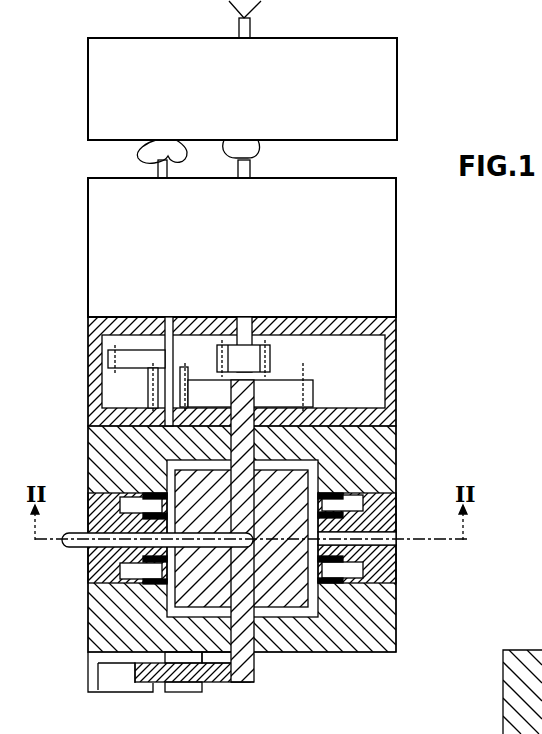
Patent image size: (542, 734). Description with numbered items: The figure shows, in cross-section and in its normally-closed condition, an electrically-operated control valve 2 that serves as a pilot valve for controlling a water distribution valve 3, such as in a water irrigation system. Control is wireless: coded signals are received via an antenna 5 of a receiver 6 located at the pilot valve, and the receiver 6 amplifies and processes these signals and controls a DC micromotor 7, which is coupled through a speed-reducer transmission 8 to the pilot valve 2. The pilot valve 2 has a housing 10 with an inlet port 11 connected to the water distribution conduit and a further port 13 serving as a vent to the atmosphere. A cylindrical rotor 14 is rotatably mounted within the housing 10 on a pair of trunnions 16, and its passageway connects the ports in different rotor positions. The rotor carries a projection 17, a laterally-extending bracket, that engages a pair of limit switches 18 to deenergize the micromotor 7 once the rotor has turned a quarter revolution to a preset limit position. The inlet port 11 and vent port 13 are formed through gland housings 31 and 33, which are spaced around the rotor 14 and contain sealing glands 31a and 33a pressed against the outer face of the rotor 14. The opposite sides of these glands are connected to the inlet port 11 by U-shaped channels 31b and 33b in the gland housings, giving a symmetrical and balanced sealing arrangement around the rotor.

The control valve 2 is at (78, 324).
The water distribution valve 3 is at (522, 673).
The antenna 5 is at (232, 14).
The receiver 6 is at (88, 99).
The DC micromotor 7 is at (88, 236).
The speed-reducer transmission 8 is at (100, 350).
The housing 10 is at (333, 655).
The inlet port 11 is at (80, 548).
The vent port 13 is at (397, 565).
The rotor 14 is at (518, 710).
The trunnions 16 is at (245, 632).
The projection 17 is at (255, 682).
The limit switches 18 is at (116, 688).
The gland housing 31 is at (168, 482).
The sealing gland 31a is at (120, 492).
The U-shaped channel 31b is at (140, 585).
The gland housing 33 is at (397, 507).
The sealing gland 33a is at (345, 583).
The U-shaped channel 33b is at (343, 493).